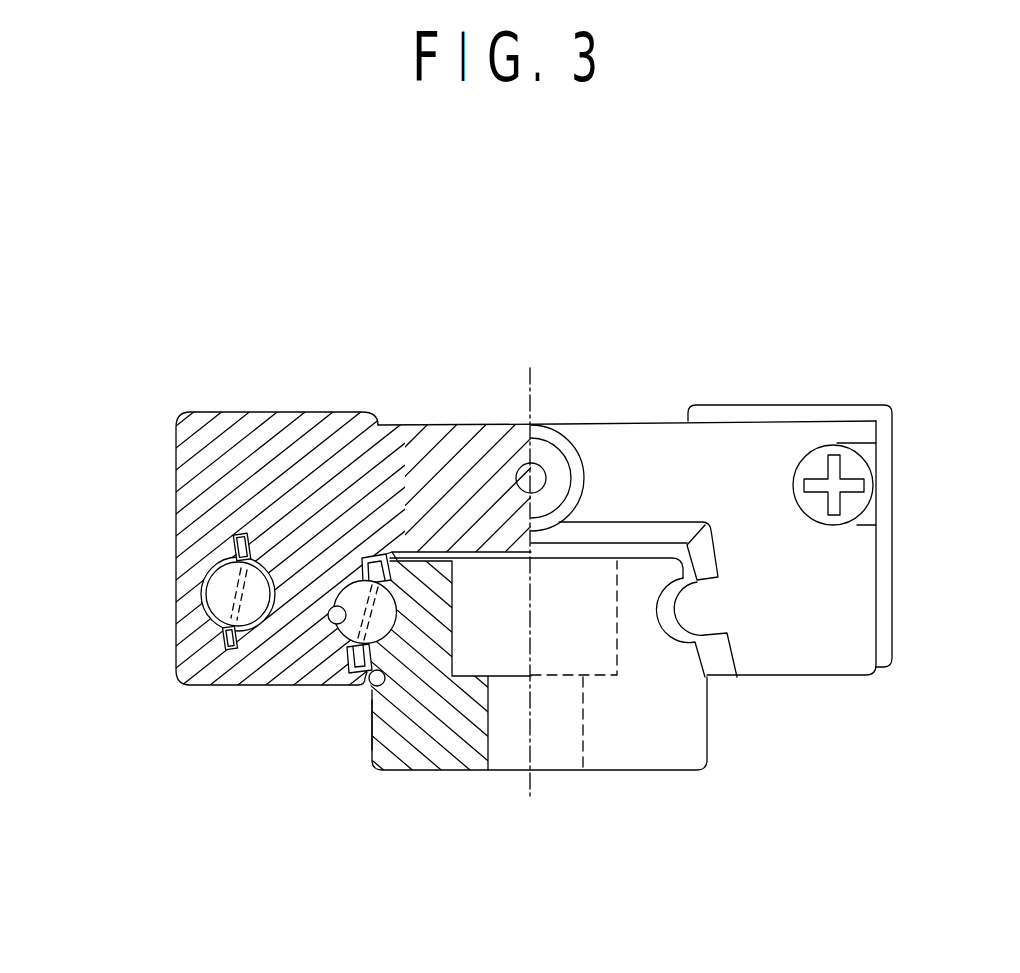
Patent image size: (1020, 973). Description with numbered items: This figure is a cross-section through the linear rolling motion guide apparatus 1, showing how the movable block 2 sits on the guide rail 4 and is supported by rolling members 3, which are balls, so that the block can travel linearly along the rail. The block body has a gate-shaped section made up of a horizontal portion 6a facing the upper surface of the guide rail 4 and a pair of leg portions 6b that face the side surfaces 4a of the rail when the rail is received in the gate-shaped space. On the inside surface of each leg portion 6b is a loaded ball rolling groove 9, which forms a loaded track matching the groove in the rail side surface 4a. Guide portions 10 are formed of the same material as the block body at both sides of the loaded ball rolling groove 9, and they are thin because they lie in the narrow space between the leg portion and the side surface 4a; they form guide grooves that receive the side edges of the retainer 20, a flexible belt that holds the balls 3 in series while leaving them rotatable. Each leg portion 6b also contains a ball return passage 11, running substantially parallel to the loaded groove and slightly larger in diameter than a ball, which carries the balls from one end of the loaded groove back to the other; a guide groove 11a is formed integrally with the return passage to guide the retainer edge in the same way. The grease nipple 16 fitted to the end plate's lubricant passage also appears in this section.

The linear rolling motion guide apparatus 1 is at (587, 325).
The movable block 2 is at (372, 452).
The rolling member 3 is at (210, 588).
The guide rail 4 is at (443, 755).
The side surface of guide rail 4a is at (367, 740).
The horizontal portion 6a is at (472, 433).
The leg portion 6b is at (190, 550).
The loaded ball rolling groove 9 is at (334, 616).
The guide portion 10 is at (395, 558).
The ball return passage 11 is at (214, 610).
The guide groove 11a is at (240, 548).
The grease nipple 16 is at (586, 438).
The retainer 20 is at (372, 682).